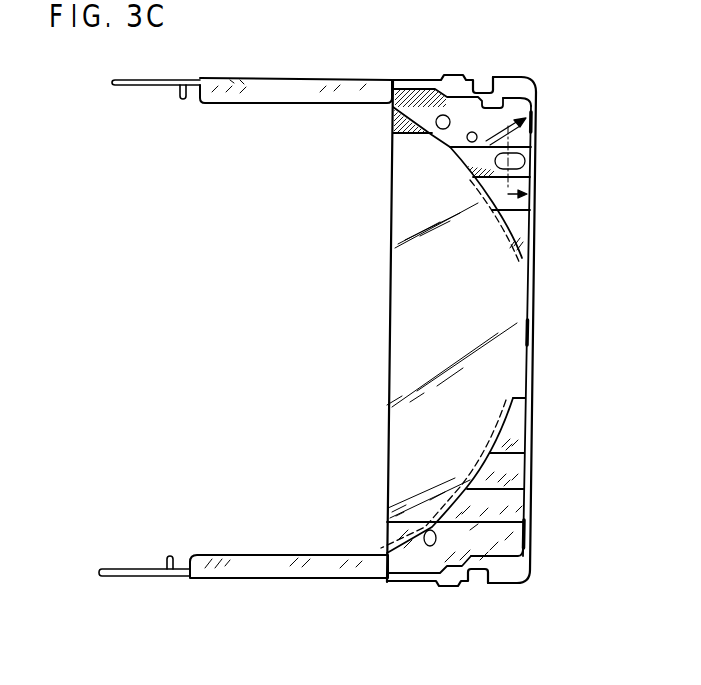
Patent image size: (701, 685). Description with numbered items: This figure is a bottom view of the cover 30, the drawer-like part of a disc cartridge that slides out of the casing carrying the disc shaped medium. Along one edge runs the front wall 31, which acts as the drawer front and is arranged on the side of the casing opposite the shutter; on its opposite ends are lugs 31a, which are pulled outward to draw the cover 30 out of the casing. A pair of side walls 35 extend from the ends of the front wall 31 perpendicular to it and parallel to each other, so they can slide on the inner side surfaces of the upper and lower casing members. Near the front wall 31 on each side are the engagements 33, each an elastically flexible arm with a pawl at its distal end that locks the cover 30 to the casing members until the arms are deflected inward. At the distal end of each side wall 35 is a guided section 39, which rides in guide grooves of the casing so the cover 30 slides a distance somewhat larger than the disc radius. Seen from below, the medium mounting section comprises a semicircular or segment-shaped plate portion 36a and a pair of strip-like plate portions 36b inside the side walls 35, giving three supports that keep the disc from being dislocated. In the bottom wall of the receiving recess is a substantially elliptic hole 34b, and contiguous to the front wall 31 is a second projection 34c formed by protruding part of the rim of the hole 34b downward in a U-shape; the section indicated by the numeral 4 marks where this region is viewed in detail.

The cover 30 is at (544, 289).
The front wall 31 is at (531, 343).
The lugs 31a is at (538, 85).
The engagements 33 is at (477, 78).
The substantially elliptic hole 34b is at (468, 160).
The second projection 34c is at (537, 158).
The side walls 35 is at (273, 78).
The plate portion 36a is at (402, 300).
The strip-like plate portions 36b is at (266, 104).
The guided section 39 is at (146, 87).
The section line 4- 4 is at (506, 158).